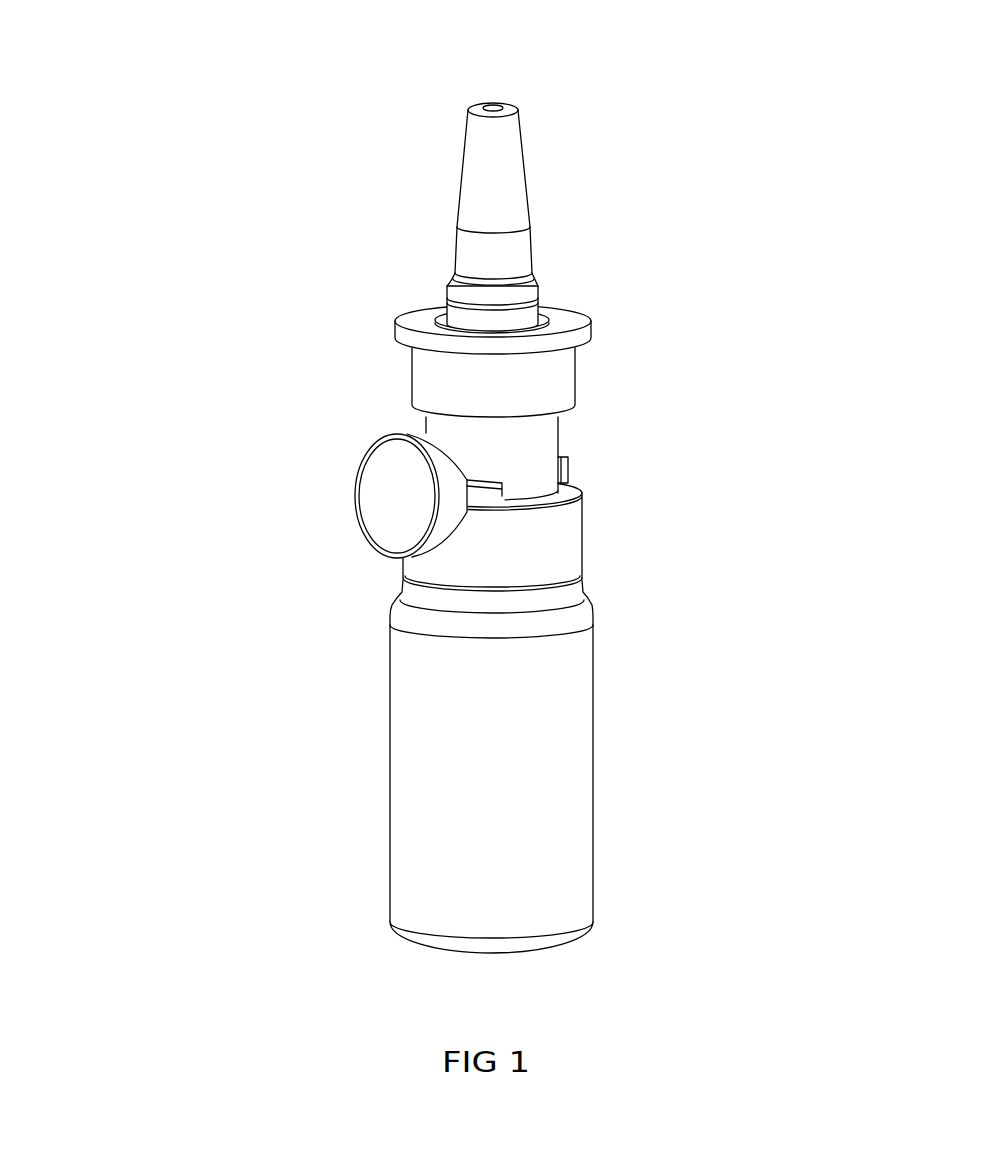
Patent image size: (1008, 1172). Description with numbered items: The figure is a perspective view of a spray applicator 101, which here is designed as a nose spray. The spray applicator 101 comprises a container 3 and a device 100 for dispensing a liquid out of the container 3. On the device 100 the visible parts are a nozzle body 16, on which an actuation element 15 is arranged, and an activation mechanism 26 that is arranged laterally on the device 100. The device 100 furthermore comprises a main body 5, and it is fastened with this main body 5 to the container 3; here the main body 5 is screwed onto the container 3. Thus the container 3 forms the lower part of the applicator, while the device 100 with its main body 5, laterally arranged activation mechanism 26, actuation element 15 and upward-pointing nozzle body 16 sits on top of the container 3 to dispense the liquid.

The container 3 is at (390, 647).
The main body 5 is at (403, 568).
The actuation element 15 is at (395, 320).
The nozzle body 16 is at (465, 147).
The activation mechanism 26 is at (363, 452).
The device for dispensing a liquid 100 is at (714, 460).
The spray applicator 101 is at (822, 110).